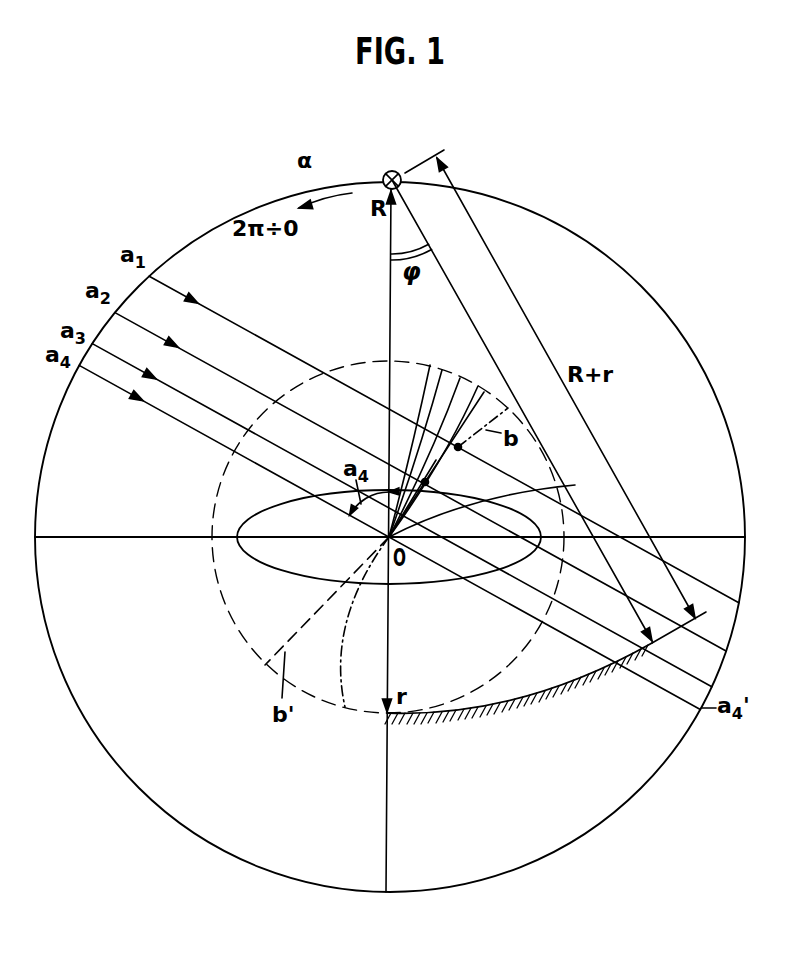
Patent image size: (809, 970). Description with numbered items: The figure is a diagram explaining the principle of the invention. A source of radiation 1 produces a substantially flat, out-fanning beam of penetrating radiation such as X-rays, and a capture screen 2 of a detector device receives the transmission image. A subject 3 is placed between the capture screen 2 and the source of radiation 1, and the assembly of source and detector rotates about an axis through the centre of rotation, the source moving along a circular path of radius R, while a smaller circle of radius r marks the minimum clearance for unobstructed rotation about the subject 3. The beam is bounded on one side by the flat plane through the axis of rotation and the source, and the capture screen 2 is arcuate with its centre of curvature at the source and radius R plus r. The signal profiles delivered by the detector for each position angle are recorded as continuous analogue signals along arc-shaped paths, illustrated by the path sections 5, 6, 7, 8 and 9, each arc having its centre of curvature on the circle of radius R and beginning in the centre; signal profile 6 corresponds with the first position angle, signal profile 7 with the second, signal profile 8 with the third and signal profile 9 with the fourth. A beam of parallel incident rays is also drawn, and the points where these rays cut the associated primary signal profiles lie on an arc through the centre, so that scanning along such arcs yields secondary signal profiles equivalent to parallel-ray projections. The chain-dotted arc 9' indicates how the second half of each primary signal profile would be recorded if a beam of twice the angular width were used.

The source of radiation 1 is at (384, 172).
The capture screen 2 is at (518, 702).
The subject 3 is at (291, 556).
The path section 5 is at (537, 500).
The signal profile 6 is at (478, 392).
The signal profile 7 is at (462, 384).
The signal profile 8 is at (441, 378).
The signal profile 9 is at (409, 432).
The chain-dotted arc 9' is at (352, 622).